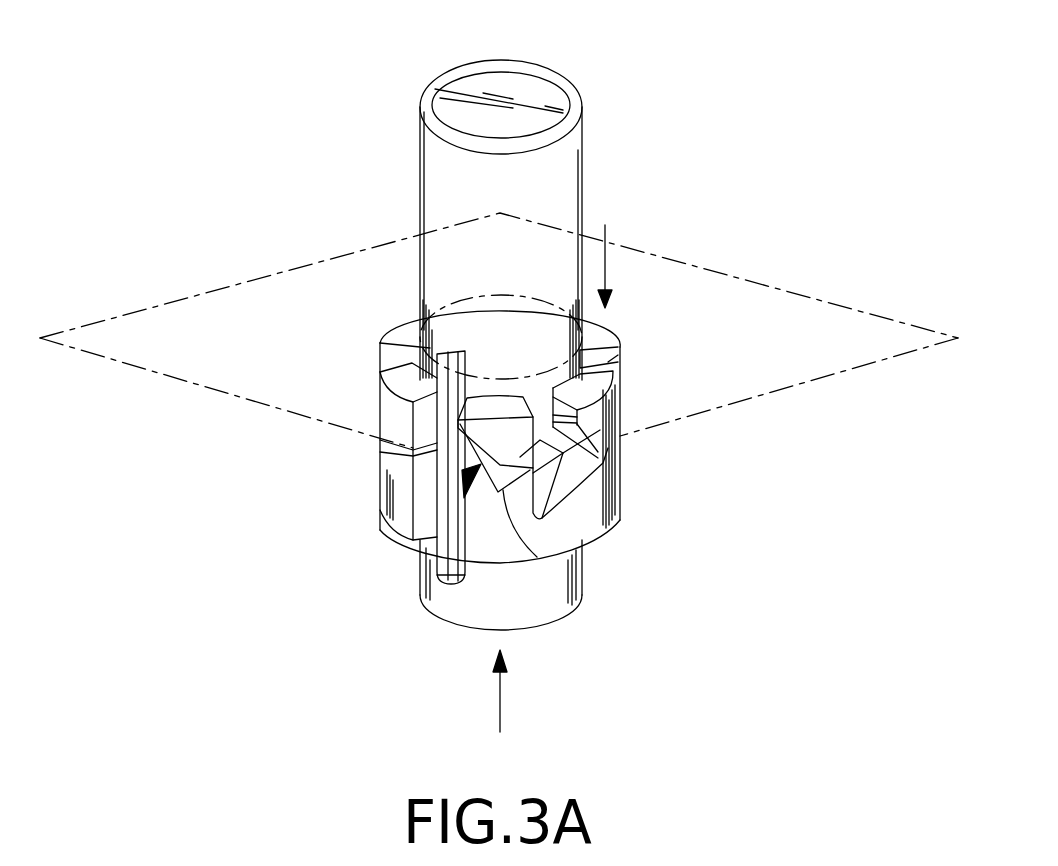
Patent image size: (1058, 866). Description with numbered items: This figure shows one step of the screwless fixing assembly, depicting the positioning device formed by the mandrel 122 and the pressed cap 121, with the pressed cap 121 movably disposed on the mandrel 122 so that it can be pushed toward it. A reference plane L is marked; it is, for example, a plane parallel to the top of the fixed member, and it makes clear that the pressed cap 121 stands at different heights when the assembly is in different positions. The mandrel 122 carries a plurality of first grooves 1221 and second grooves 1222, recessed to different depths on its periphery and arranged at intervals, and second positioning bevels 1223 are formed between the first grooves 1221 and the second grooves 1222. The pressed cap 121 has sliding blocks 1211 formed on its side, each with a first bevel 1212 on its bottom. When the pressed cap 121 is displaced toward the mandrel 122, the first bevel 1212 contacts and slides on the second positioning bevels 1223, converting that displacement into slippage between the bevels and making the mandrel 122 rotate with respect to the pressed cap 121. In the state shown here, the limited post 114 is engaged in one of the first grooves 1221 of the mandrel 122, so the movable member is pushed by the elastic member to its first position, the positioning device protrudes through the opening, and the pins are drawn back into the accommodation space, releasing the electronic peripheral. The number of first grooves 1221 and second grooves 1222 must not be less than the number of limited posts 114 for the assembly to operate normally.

The pressed cap 121 is at (467, 75).
The sliding block 1211 is at (505, 437).
The first bevel 1212 is at (417, 453).
The mandrel 122 is at (443, 595).
The first groove 1221 is at (430, 503).
The second groove 1222 is at (522, 458).
The second positioning bevel 1223 is at (560, 490).
The limited post 114 is at (440, 566).
The reference plane L is at (203, 307).